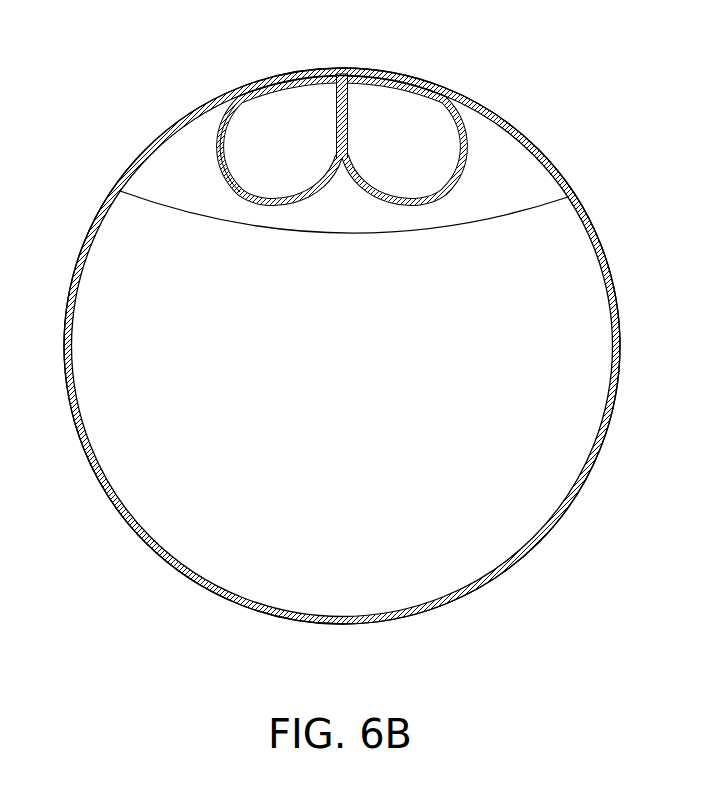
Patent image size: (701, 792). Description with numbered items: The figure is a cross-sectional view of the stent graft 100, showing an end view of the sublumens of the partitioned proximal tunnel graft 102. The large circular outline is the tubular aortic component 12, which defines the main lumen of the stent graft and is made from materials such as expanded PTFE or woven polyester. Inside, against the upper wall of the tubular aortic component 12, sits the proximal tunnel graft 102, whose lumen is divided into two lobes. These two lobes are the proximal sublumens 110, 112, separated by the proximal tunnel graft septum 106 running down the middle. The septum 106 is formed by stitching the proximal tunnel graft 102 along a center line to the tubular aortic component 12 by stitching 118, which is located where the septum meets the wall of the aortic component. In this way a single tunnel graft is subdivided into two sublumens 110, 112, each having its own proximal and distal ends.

The tubular aortic component 12 is at (73, 272).
The stent graft 100 is at (122, 519).
The proximal tunnel graft 102 is at (220, 127).
The proximal tunnel graft septum 106 is at (323, 103).
The proximal sublumen 110 is at (260, 150).
The proximal sublumen 112 is at (432, 128).
The stitching 118 is at (342, 71).